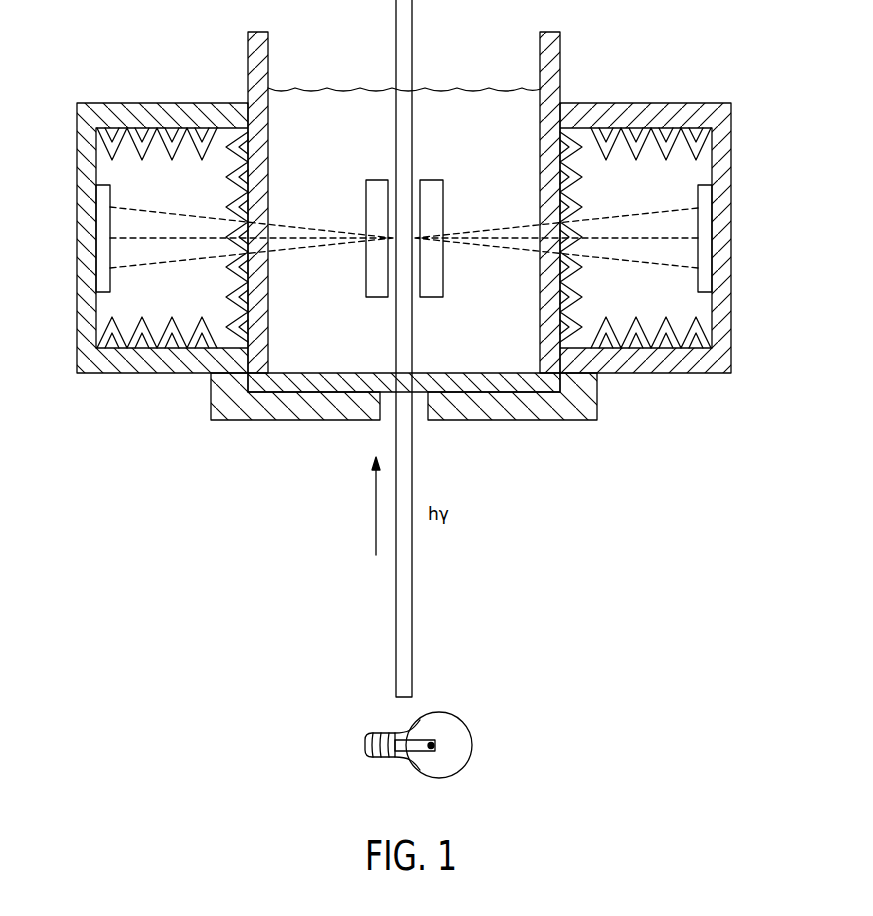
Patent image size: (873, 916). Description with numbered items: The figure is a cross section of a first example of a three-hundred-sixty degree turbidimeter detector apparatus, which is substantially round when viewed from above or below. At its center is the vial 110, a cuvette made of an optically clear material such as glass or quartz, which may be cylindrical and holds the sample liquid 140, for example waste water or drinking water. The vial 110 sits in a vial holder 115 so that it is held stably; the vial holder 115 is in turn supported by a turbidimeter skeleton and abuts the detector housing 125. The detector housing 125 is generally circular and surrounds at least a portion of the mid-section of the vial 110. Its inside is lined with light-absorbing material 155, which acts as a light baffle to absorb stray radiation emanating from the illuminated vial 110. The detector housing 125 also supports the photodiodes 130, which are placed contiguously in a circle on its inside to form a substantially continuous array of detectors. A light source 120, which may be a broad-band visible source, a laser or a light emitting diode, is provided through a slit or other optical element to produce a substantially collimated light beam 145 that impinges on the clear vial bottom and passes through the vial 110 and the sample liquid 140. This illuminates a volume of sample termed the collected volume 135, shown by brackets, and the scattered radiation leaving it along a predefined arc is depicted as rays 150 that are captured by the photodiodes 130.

The vial 110 is at (562, 48).
The vial holder 115 is at (523, 404).
The light source 120 is at (383, 735).
The detector housing 125 is at (726, 310).
The photodiodes 130 is at (105, 245).
The collected volume 135 is at (366, 192).
The sample liquid 140 is at (315, 330).
The collimated light beam 145 is at (412, 600).
The rays 150 is at (177, 213).
The light-absorbing material 155 is at (102, 143).